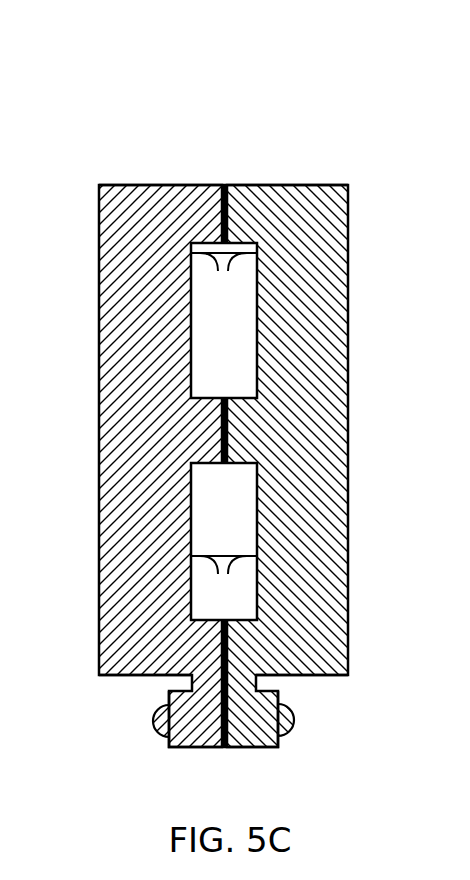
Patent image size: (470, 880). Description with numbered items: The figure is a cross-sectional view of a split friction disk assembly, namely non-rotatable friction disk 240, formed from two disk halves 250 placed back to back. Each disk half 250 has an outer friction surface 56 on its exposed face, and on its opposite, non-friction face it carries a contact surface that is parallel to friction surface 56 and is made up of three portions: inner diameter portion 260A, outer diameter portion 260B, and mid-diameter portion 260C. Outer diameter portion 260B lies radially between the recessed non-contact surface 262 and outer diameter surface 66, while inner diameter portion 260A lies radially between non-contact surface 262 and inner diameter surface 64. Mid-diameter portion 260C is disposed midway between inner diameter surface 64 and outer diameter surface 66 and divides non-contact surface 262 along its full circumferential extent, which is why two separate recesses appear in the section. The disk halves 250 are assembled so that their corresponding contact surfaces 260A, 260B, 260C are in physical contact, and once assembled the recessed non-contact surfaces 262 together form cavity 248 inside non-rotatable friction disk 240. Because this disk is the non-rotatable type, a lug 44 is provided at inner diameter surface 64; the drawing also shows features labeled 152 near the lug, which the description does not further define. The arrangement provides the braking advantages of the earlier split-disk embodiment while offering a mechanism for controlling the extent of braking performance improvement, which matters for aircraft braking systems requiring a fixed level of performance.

The non-rotatable friction disk 240 is at (247, 96).
The disk half 250 is at (158, 177).
The friction surface 56 is at (99, 437).
The outer diameter surface 66 is at (113, 184).
The inner diameter surface 64 is at (120, 676).
The lug 44 is at (260, 748).
The sealing ring (o-ring) 152 is at (180, 749).
The cavity 248 is at (205, 354).
The non-contact surface 262 is at (224, 427).
The inner diameter portion 260A is at (227, 634).
The outer diameter portion 260B is at (227, 231).
The mid-diameter portion 260C is at (227, 430).